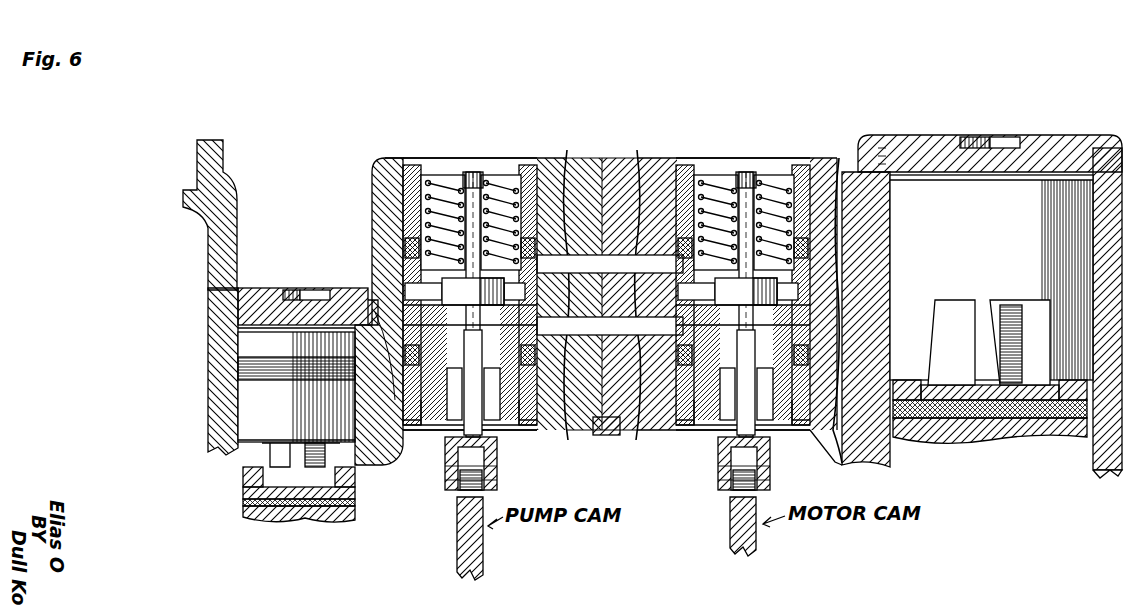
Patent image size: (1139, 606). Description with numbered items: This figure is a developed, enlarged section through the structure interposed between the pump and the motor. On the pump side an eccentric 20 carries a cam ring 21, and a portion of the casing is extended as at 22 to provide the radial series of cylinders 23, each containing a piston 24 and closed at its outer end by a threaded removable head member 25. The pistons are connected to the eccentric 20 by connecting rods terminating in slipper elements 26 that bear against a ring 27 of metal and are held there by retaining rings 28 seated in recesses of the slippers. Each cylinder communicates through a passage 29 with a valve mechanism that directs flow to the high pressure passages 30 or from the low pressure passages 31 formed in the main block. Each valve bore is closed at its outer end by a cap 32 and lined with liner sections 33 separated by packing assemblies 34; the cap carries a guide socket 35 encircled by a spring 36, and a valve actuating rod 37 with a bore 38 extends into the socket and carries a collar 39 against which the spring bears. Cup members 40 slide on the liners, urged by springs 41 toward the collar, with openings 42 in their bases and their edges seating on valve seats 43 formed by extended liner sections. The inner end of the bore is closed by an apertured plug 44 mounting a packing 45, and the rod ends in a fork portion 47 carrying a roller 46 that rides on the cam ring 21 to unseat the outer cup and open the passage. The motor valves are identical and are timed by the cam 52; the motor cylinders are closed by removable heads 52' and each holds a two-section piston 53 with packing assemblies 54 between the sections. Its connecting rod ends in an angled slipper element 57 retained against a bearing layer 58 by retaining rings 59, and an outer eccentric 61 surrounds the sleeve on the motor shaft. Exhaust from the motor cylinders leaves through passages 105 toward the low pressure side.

The eccentric 20 is at (268, 510).
The cam ring 21 is at (457, 540).
The casing extension 22 is at (200, 178).
The cylinders 23 is at (240, 329).
The piston 24 is at (258, 403).
The removable head member 25 is at (258, 292).
The slipper elements 26 is at (243, 492).
The ring of metal 27 is at (245, 503).
The retaining rings 28 is at (243, 475).
The passage 29 is at (375, 380).
The high pressure passages 30 is at (622, 190).
The low pressure passages 31 is at (555, 390).
The cap 32 is at (512, 170).
The liner sections 33 is at (575, 175).
The packing assemblies 34 is at (384, 240).
The guide socket 35 is at (437, 178).
The spring 36 is at (478, 172).
The valve actuating rod 37 is at (455, 410).
The bore 38 is at (464, 415).
The collar 39 is at (609, 291).
The cup members 40 is at (405, 240).
The springs 41 is at (530, 185).
The openings 42 is at (410, 285).
The valve seats 43 is at (590, 250).
The plug 44 is at (440, 427).
The packing 45 is at (906, 291).
The roller 46 is at (460, 485).
The fork portion 47 is at (497, 458).
The cam 52 is at (717, 526).
The removable heads 52' is at (990, 134).
The piston 53 is at (1006, 313).
The packing assemblies 54 is at (240, 368).
The slipper element 57 is at (952, 385).
The bearing layer 58 is at (1020, 395).
The retaining rings 59 is at (1072, 380).
The eccentric 61 is at (1013, 432).
The passages 105 is at (842, 175).